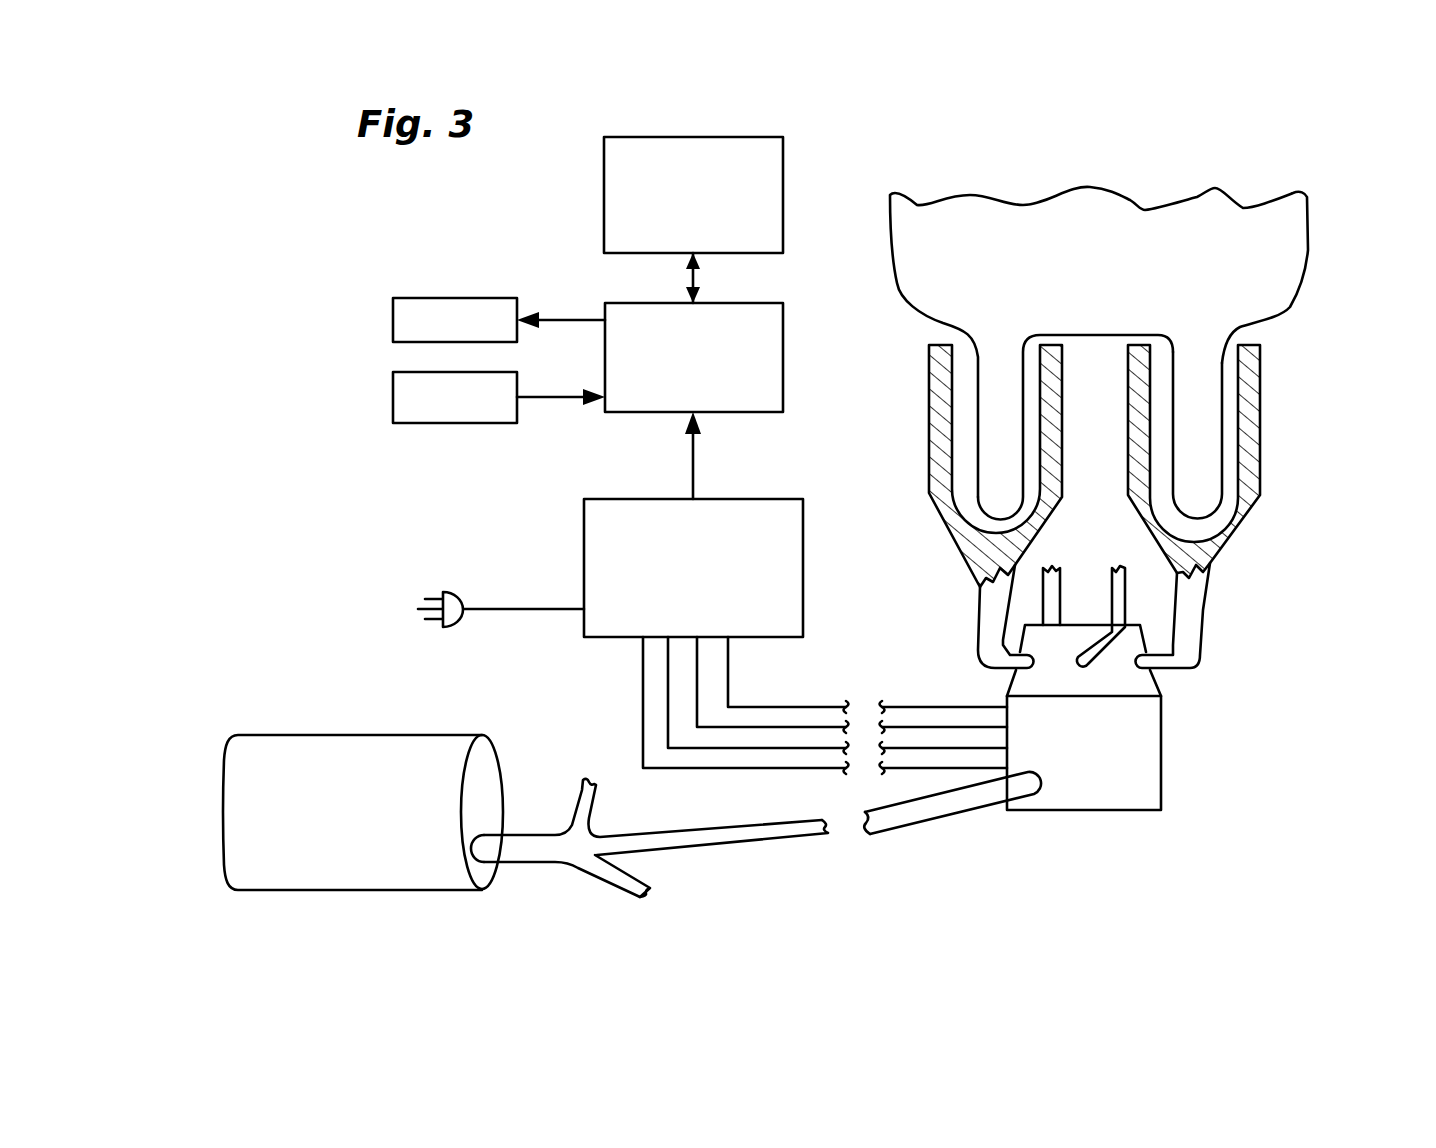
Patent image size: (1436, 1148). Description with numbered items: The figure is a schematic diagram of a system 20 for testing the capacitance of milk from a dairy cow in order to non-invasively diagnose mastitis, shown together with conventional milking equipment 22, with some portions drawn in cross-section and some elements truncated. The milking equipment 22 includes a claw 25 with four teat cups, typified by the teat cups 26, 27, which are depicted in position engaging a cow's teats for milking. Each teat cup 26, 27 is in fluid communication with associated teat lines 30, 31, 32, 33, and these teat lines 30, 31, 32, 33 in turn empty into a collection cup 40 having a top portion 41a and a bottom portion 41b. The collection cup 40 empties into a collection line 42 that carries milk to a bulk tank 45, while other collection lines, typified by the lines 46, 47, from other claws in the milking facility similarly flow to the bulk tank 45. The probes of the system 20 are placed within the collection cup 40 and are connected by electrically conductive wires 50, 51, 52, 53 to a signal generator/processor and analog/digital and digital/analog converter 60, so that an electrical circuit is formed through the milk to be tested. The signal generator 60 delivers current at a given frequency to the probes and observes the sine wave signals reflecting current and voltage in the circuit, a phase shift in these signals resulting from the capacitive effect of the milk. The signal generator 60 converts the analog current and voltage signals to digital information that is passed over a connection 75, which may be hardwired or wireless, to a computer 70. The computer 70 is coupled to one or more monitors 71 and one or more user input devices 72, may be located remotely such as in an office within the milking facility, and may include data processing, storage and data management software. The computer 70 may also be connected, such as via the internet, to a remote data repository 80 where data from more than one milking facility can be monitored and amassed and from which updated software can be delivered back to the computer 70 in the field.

The system 20 is at (396, 448).
The milking equipment 22 is at (1280, 557).
The claw 25 is at (1266, 529).
The teat cup 26 is at (1257, 408).
The teat cup 27 is at (929, 412).
The teat line 30 is at (1208, 597).
The teat line 31 is at (977, 617).
The teat line 32 is at (1062, 578).
The teat line 33 is at (1125, 582).
The collection cup 40 is at (1132, 717).
The top portion 41a is at (1150, 681).
The bottom portion 41b is at (1157, 765).
The collection line 42 is at (895, 833).
The bulk tank 45 is at (372, 736).
The collection line 46 is at (580, 807).
The collection line 47 is at (617, 880).
The electrically conductive wire 50 is at (825, 727).
The electrically conductive wire 51 is at (738, 727).
The electrically conductive wire 52 is at (787, 748).
The electrically conductive wire 53 is at (720, 768).
The signal generator/processor and analog/digital and digital/analog converter 60 is at (584, 525).
The computer 70 is at (778, 374).
The monitor 71 is at (393, 320).
The user input device 72 is at (397, 401).
The connection 75 is at (690, 462).
The remote data repository 80 is at (604, 156).